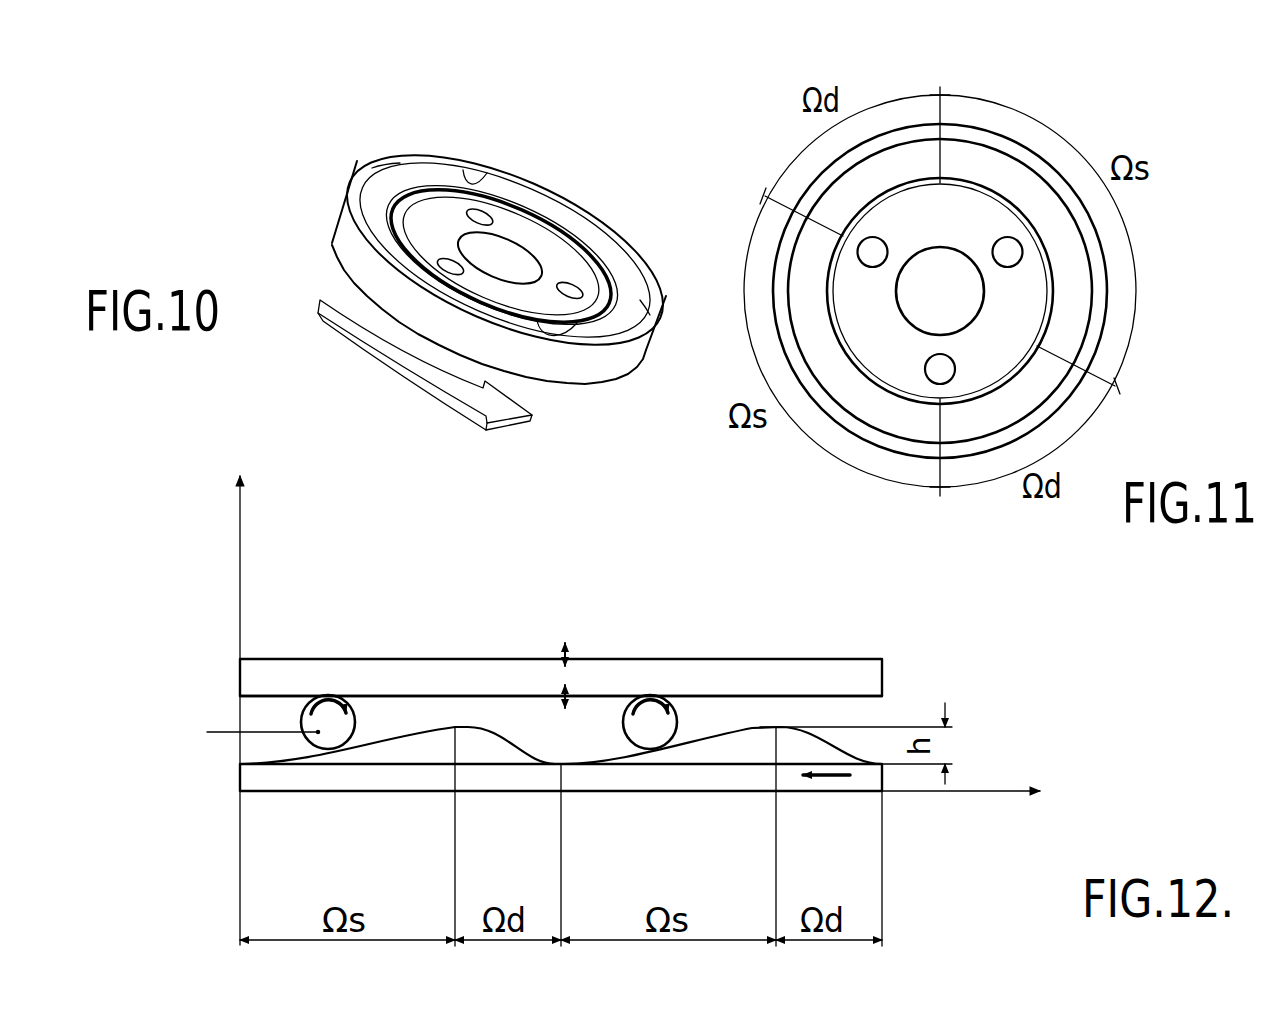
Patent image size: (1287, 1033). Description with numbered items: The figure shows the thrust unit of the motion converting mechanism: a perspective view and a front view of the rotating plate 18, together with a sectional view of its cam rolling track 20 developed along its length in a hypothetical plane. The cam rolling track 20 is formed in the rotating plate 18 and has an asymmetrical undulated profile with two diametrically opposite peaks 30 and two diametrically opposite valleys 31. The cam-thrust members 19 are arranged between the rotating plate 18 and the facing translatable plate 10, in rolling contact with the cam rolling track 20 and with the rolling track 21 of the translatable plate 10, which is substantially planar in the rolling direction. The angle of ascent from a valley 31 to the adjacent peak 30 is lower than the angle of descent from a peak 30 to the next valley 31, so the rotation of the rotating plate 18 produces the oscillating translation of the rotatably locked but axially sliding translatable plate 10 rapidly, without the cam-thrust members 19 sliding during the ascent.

In FIG. 12, the translatable plate 10 is at (282, 678).
In FIG. 10, the rotating plate 18 is at (535, 185).
In FIG. 11, the rotating plate 18 is at (1087, 231).
In FIG. 12, the rotating plate 18 is at (282, 778).
In FIG. 12, the cam-thrust members 19 is at (328, 722).
In FIG. 10, the cam rolling track 20 is at (622, 250).
In FIG. 11, the cam rolling track 20 is at (868, 412).
In FIG. 12, the cam rolling track 20 is at (756, 722).
In FIG. 12, the rolling track 21 is at (530, 698).
In FIG. 10, the peaks 30 is at (390, 173).
In FIG. 10, the valleys 31 is at (466, 190).